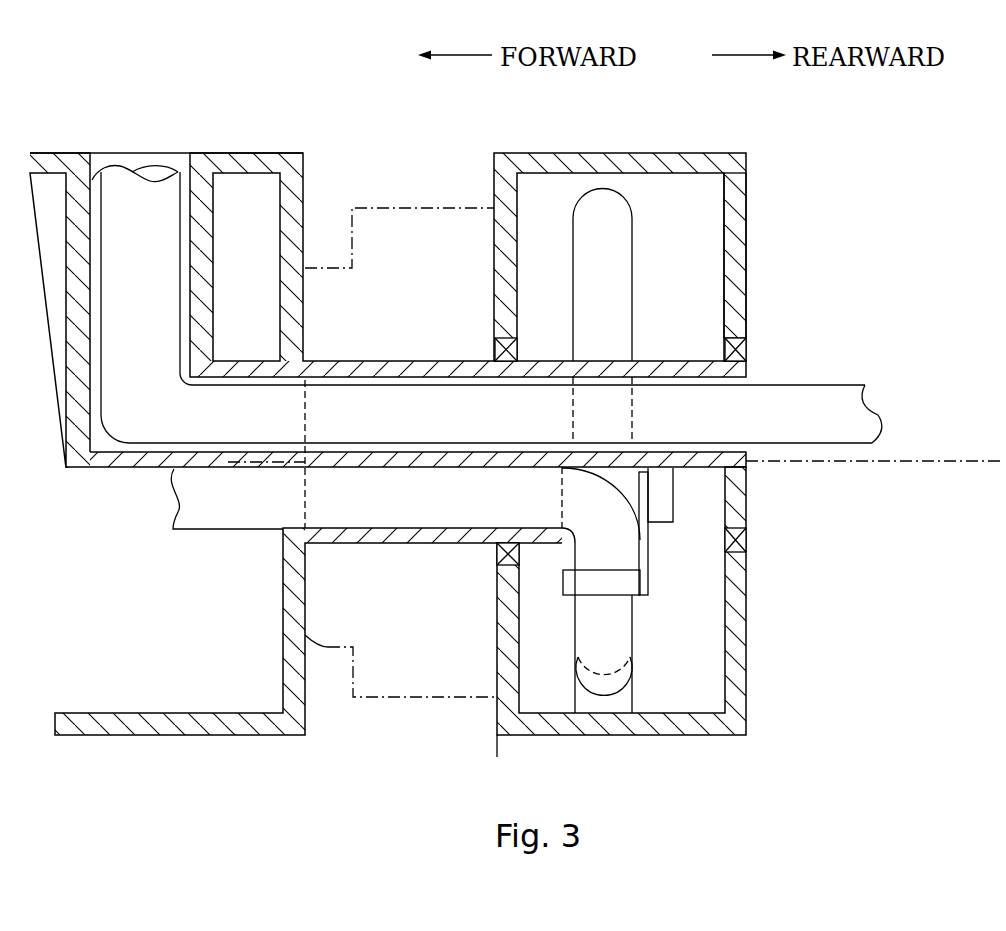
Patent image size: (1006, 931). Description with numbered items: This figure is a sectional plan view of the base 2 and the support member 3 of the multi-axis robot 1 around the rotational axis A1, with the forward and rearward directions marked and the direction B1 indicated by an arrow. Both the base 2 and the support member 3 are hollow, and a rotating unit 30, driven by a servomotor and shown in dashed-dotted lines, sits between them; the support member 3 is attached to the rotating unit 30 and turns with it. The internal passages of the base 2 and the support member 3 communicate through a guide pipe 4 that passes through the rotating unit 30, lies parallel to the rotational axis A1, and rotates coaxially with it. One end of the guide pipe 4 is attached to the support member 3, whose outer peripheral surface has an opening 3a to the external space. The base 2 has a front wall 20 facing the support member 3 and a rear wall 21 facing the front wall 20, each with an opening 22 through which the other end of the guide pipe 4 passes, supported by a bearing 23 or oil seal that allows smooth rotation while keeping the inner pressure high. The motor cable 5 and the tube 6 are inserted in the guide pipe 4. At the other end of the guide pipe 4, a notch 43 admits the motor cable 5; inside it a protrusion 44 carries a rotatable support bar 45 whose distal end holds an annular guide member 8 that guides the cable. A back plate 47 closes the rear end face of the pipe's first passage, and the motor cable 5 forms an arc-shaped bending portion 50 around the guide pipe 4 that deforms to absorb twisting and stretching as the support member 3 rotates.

The multi-axis robot 1 is at (779, 767).
The base 2 is at (650, 153).
The support member 3 is at (197, 168).
The opening 3a is at (92, 181).
The guide pipe 4 is at (328, 358).
The motor cable 5 is at (230, 522).
The tube 6 is at (855, 413).
The guide member 8 is at (563, 585).
The front wall 20 is at (517, 247).
The rear wall 21 is at (747, 222).
The openings 22 is at (500, 340).
The bearing 23 is at (497, 553).
The rotating unit 30 is at (410, 208).
The notch 43 is at (677, 535).
The protrusion 44 is at (662, 497).
The support bar 45 is at (645, 563).
The back plate 47 is at (746, 476).
The bending portion 50 is at (622, 622).
The rotational axis A1 is at (933, 462).
The direction B1 is at (774, 657).